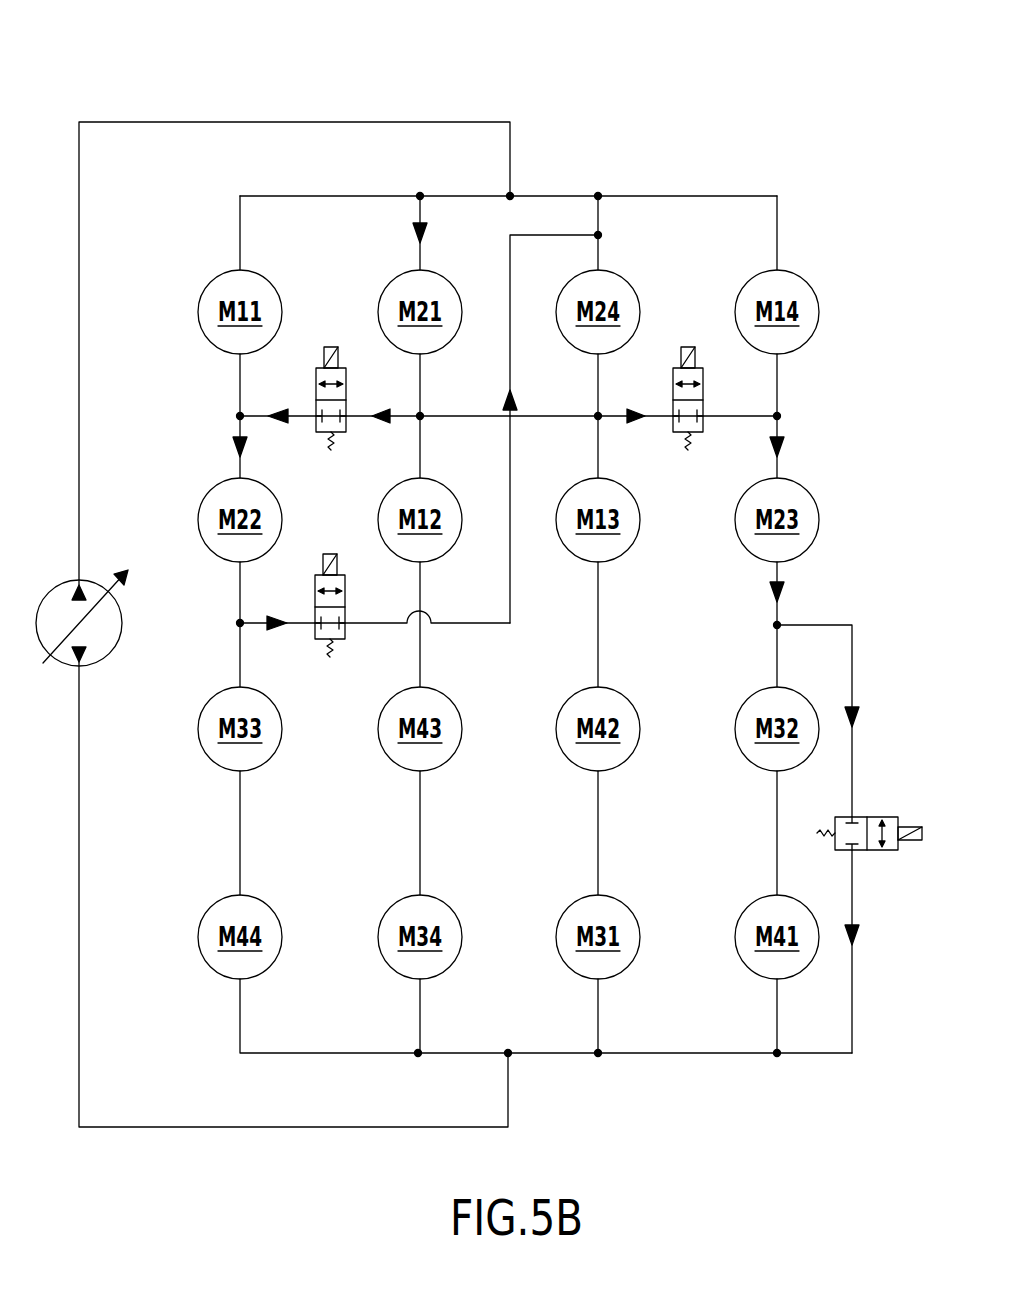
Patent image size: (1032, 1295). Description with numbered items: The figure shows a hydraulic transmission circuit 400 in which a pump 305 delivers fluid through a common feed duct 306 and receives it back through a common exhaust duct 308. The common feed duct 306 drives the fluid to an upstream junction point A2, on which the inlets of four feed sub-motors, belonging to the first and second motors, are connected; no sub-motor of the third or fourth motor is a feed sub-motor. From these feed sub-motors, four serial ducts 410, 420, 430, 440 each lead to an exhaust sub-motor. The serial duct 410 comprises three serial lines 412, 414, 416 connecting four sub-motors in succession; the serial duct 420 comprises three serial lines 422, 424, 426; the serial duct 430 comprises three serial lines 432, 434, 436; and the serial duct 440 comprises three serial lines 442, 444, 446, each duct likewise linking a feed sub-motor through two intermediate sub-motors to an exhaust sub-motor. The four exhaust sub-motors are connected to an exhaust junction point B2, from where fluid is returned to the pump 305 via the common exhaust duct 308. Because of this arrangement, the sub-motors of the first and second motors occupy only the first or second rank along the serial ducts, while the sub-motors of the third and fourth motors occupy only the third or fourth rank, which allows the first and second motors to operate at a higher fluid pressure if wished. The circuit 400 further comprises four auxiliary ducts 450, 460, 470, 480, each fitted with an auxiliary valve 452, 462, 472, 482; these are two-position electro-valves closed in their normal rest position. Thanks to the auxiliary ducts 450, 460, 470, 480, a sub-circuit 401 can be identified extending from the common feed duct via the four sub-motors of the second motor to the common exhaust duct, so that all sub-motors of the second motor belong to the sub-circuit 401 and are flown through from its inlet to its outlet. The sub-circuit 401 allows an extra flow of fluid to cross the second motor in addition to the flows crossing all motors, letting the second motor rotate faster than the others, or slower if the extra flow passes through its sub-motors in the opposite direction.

The pump 305 is at (108, 655).
The common feed duct 306 is at (250, 122).
The common exhaust duct 308 is at (247, 1128).
The hydraulic transmission circuit 400 is at (704, 88).
The sub-circuit 401 is at (518, 372).
The serial duct 410 is at (230, 453).
The serial line 412 is at (239, 382).
The serial line 414 is at (239, 590).
The serial line 416 is at (239, 842).
The serial duct 420 is at (410, 450).
The serial line 422 is at (420, 374).
The serial line 424 is at (420, 656).
The serial line 426 is at (420, 843).
The serial duct 430 is at (588, 451).
The serial line 432 is at (598, 469).
The serial line 434 is at (598, 617).
The serial line 436 is at (598, 840).
The serial duct 440 is at (764, 451).
The serial line 442 is at (777, 390).
The serial line 444 is at (777, 578).
The serial line 446 is at (777, 843).
The auxiliary duct 450 is at (405, 412).
The auxiliary valve 452 is at (322, 368).
The auxiliary duct 460 is at (470, 623).
The auxiliary valve 462 is at (315, 555).
The auxiliary duct 470 is at (624, 412).
The auxiliary valve 472 is at (676, 368).
The auxiliary duct 480 is at (852, 680).
The auxiliary valve 482 is at (889, 817).
The upstream junction point A2 is at (510, 196).
The exhaust junction point B2 is at (508, 1053).